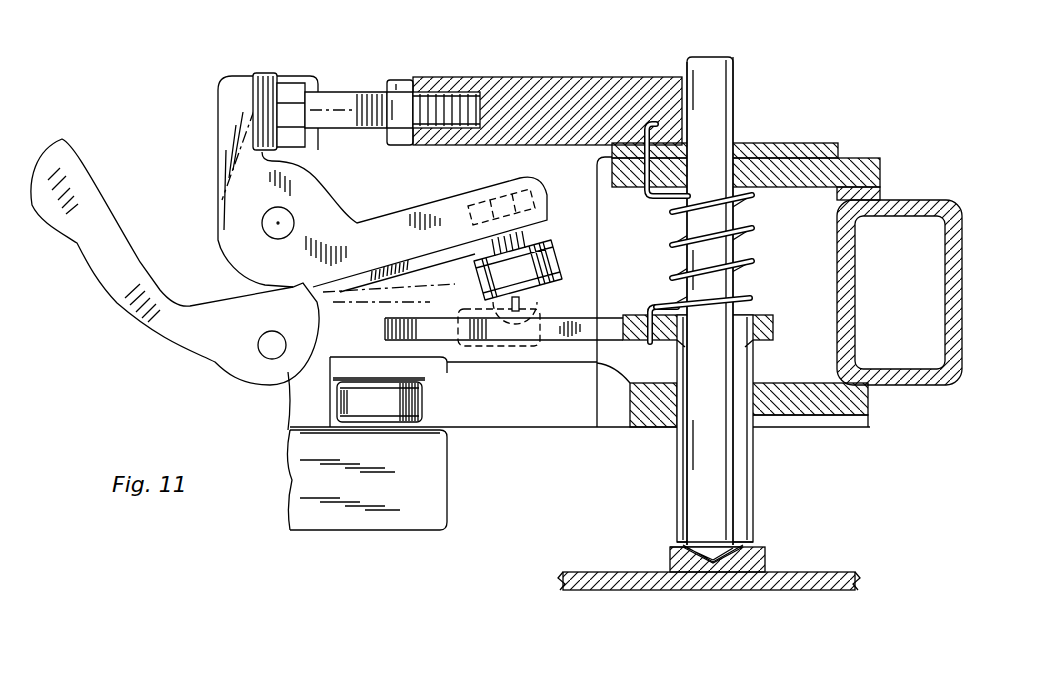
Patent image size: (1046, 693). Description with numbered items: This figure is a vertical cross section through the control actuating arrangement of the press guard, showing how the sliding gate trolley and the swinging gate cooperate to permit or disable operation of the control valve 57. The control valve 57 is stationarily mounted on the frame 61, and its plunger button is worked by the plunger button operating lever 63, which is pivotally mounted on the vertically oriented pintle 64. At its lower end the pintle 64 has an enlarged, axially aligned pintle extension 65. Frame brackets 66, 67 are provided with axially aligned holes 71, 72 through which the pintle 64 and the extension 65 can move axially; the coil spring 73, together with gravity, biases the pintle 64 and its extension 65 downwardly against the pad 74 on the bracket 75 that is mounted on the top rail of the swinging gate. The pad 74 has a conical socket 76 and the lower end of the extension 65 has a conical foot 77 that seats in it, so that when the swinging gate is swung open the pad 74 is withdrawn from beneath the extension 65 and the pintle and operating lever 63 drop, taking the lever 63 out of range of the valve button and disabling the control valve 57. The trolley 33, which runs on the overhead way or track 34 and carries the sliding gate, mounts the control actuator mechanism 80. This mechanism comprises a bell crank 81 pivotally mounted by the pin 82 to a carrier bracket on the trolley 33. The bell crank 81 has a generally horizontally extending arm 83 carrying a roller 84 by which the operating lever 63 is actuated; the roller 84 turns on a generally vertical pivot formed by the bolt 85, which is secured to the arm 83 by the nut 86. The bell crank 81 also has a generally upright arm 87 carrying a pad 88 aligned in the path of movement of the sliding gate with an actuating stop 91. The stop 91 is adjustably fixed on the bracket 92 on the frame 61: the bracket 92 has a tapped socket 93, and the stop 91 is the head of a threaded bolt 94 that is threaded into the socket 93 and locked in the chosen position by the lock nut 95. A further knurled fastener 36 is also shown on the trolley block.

The control actuator mechanism 80 is at (142, 120).
The upright arm 87 is at (222, 96).
The pad 88 is at (270, 137).
The pin 82 is at (268, 227).
The actuating stop 91 is at (273, 135).
The threaded bolt 94 is at (370, 92).
The lock nut 95 is at (400, 85).
The tapped socket 93 is at (468, 95).
The bracket 92 is at (608, 82).
The pintle 64 is at (715, 68).
The hole 71 is at (720, 142).
The frame bracket 66 is at (856, 178).
The frame 61 is at (910, 208).
The control valve 57 is at (795, 223).
The bell crank 81 is at (318, 193).
The horizontally extending arm 83 is at (452, 213).
The nut 86 is at (522, 200).
The roller 84 is at (550, 262).
The bolt 85 is at (545, 297).
The plunger button operating lever 63 is at (628, 320).
The coil spring 73 is at (748, 271).
The frame bracket 67 is at (843, 397).
The hole 72 is at (740, 438).
The pintle extension 65 is at (720, 465).
The conical foot 77 is at (722, 545).
The pad 74 is at (762, 562).
The conical socket 76 is at (677, 555).
The bracket 75 is at (582, 582).
The overhead way or track 34 is at (525, 398).
The trolley 33 is at (340, 520).
The knurled nut 36 is at (345, 404).